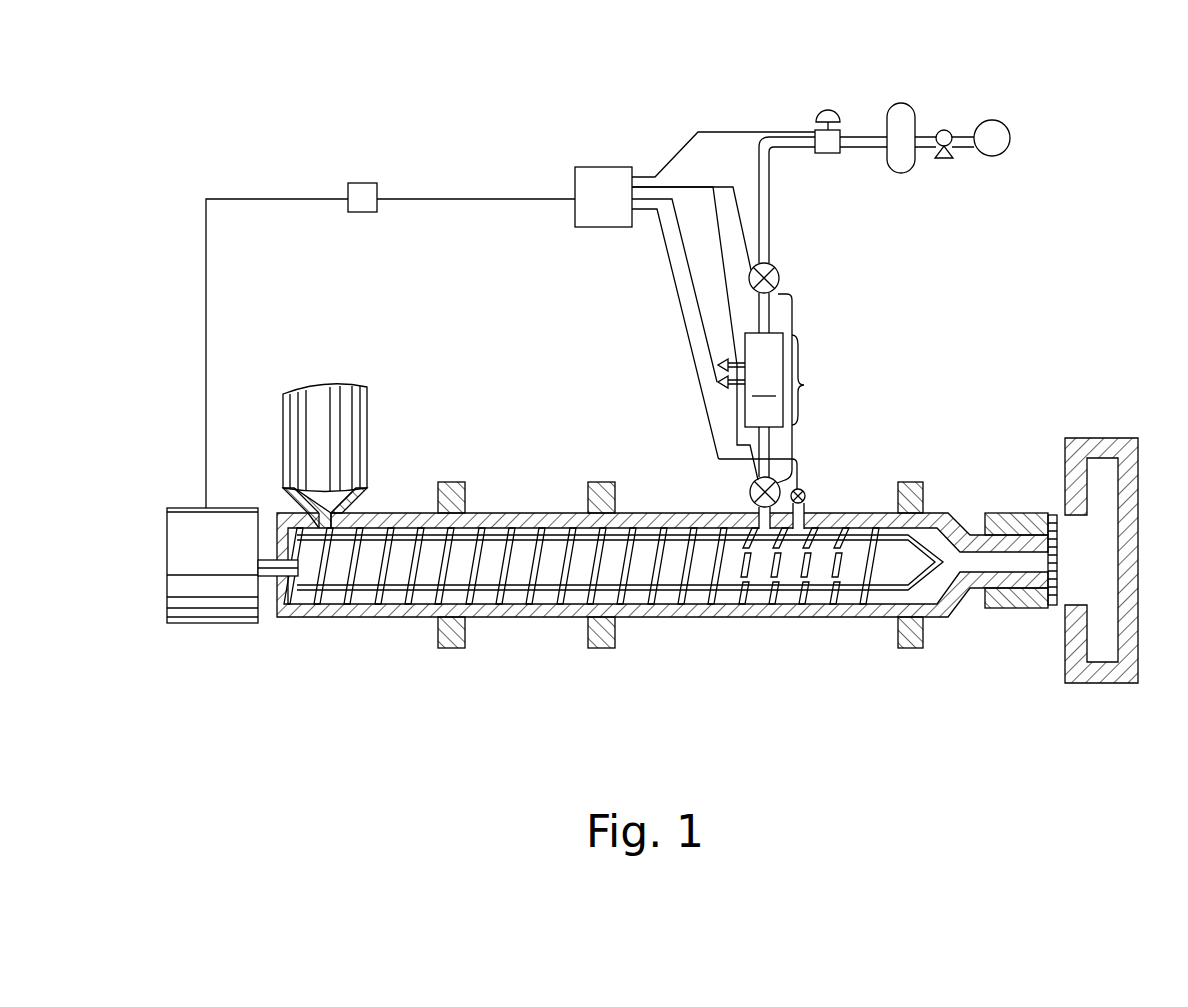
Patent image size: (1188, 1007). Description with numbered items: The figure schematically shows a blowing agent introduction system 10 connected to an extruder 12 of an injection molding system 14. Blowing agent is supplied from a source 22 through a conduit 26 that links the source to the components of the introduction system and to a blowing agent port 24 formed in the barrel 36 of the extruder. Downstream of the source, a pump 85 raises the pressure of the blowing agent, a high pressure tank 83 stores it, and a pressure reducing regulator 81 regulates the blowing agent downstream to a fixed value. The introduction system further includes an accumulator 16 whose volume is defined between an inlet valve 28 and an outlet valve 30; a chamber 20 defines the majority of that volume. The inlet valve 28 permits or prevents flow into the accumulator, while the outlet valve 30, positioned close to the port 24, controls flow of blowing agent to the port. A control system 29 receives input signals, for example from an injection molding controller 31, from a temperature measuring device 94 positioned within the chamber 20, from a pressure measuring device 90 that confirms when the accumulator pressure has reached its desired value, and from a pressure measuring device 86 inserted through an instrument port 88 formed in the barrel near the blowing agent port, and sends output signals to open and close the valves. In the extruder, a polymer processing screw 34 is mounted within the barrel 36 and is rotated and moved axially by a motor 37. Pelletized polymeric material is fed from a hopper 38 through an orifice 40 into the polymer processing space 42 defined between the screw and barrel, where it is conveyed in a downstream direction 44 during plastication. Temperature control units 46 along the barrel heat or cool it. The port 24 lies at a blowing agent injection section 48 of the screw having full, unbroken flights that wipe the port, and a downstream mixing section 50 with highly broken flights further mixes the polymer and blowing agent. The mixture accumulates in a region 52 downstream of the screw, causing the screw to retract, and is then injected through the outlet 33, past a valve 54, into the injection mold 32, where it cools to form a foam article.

The blowing agent introduction system 10 is at (652, 422).
The extruder 12 is at (527, 310).
The injection molding system 14 is at (652, 562).
The accumulator 16 is at (861, 284).
The chamber 20 is at (764, 405).
The blowing agent source 22 is at (1003, 150).
The blowing agent port 24 is at (748, 508).
The conduit 26 is at (770, 212).
The inlet valve 28 is at (777, 270).
The control system 29 is at (600, 167).
The outlet valve 30 is at (752, 485).
The injection molding controller 31 is at (362, 183).
The injection mold 32 is at (1090, 438).
The outlet 33 is at (1010, 535).
The polymer processing screw 34 is at (557, 513).
The barrel 36 is at (373, 617).
The motor 37 is at (183, 625).
The hopper 38 is at (318, 412).
The orifice 40 is at (318, 498).
The polymer processing space 42 is at (530, 513).
The downstream direction 44 is at (598, 394).
The temperature control units 46 is at (452, 482).
The blowing agent injection section 48 is at (793, 620).
The mixing section 50 is at (797, 620).
The region 52 is at (967, 577).
The valve 54 is at (1052, 606).
The pressure reducing regulator 81 is at (826, 110).
The high pressure tank 83 is at (900, 174).
The pump 85 is at (945, 130).
The pressure measuring device 86 is at (803, 489).
The instrument port 88 is at (815, 505).
The pressure measuring device 90 is at (718, 385).
The temperature measuring device 94 is at (720, 363).